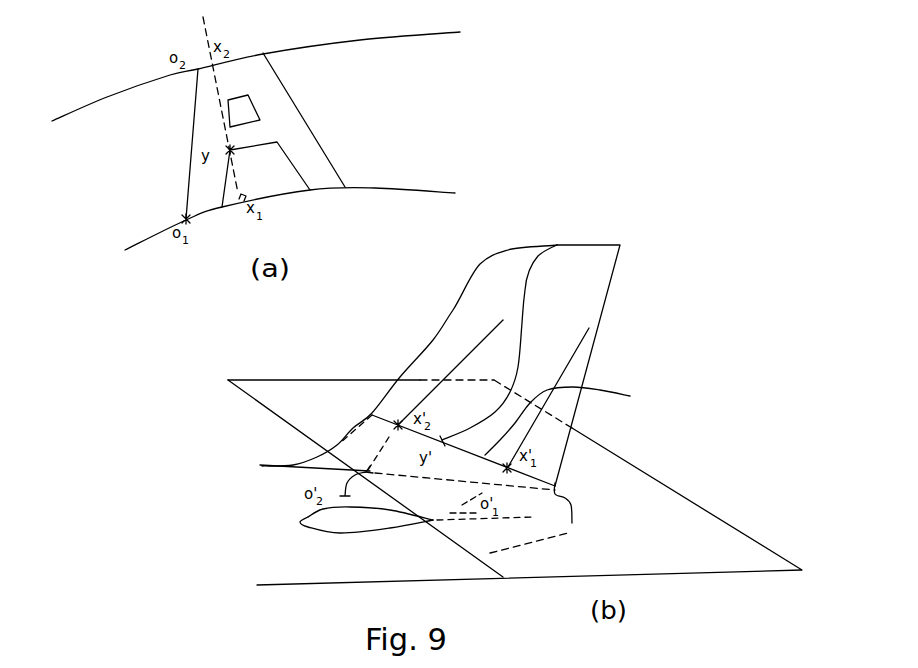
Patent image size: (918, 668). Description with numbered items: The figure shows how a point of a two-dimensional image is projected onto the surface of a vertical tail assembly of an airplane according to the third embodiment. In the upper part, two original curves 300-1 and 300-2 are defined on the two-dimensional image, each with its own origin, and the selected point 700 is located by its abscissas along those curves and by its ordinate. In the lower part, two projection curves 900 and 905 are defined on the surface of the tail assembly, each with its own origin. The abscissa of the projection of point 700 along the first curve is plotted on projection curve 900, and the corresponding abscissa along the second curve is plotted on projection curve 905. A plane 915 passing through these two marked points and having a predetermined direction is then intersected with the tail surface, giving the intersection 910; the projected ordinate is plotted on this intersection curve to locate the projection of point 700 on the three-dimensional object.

The second original curve 300-2 is at (107, 96).
The first original curve 300-1 is at (376, 189).
The selected point 700 is at (249, 141).
The first projection curve 900 is at (591, 349).
The second projection curve 905 is at (450, 368).
The intersection 910 is at (574, 421).
The plane 915 is at (557, 245).